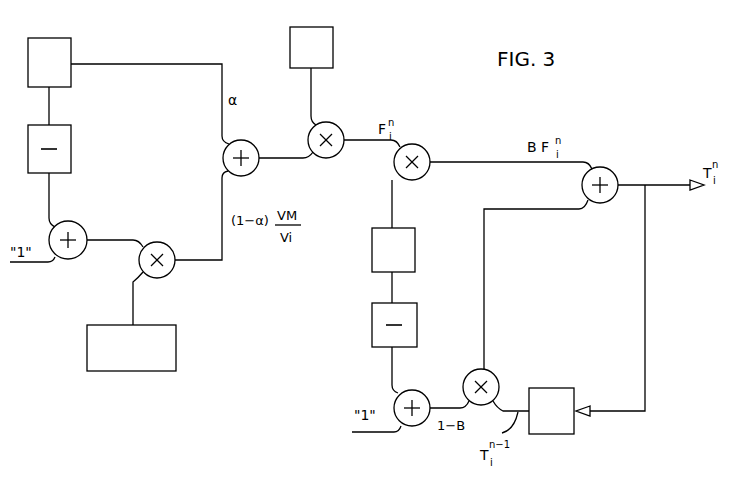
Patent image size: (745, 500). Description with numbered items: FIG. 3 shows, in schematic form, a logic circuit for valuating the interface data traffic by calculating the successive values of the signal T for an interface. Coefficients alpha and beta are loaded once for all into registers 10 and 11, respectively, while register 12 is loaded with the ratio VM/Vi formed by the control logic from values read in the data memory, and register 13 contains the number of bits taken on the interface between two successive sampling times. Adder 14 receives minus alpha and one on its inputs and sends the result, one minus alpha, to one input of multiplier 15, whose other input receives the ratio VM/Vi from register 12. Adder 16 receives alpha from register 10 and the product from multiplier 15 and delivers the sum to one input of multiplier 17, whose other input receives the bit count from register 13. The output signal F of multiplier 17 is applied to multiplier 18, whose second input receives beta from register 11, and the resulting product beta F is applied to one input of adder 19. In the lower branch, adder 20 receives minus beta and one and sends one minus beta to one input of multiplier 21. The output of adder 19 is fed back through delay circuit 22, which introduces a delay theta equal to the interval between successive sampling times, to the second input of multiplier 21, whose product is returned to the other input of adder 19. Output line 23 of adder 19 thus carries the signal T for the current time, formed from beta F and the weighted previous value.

The register 10 is at (52, 37).
The register 11 is at (410, 237).
The register 12 is at (148, 324).
The register 13 is at (323, 26).
The adder 14 is at (72, 222).
The multiplier 15 is at (163, 243).
The adder 16 is at (254, 130).
The multiplier 17 is at (332, 123).
The multiplier 18 is at (418, 145).
The adder 19 is at (604, 168).
The adder 20 is at (416, 391).
The multiplier 21 is at (486, 370).
The delay circuit 22 is at (555, 387).
The output line 23 is at (650, 184).